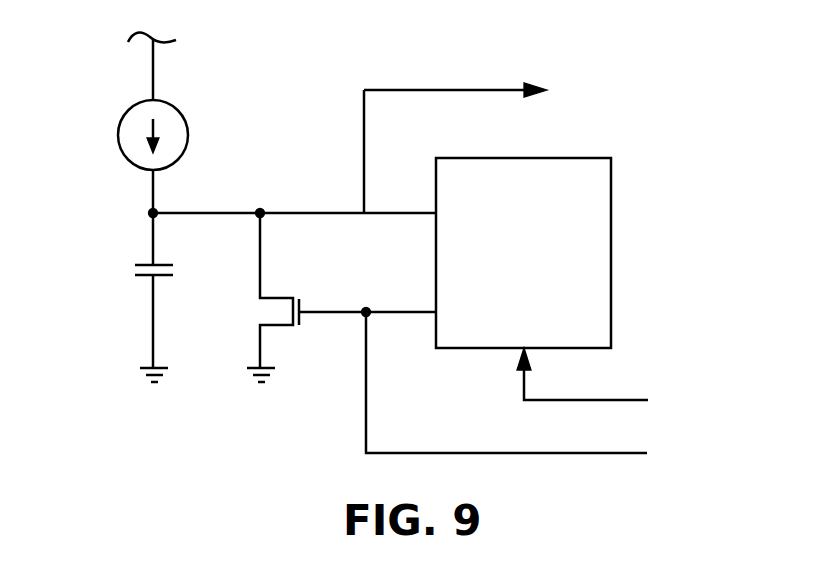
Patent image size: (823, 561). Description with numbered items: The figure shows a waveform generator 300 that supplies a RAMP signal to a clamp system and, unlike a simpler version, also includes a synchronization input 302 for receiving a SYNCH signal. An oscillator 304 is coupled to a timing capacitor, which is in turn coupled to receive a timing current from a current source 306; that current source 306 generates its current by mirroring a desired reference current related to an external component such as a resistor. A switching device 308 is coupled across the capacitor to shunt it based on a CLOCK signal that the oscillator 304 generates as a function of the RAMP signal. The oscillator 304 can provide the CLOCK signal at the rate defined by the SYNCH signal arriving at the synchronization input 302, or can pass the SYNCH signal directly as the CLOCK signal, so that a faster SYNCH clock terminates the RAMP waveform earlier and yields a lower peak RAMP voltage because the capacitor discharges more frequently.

The waveform generator 300 is at (695, 66).
The synchronization input 302 is at (547, 400).
The oscillator 304 is at (538, 158).
The current source 306 is at (165, 102).
The switching device 308 is at (292, 297).